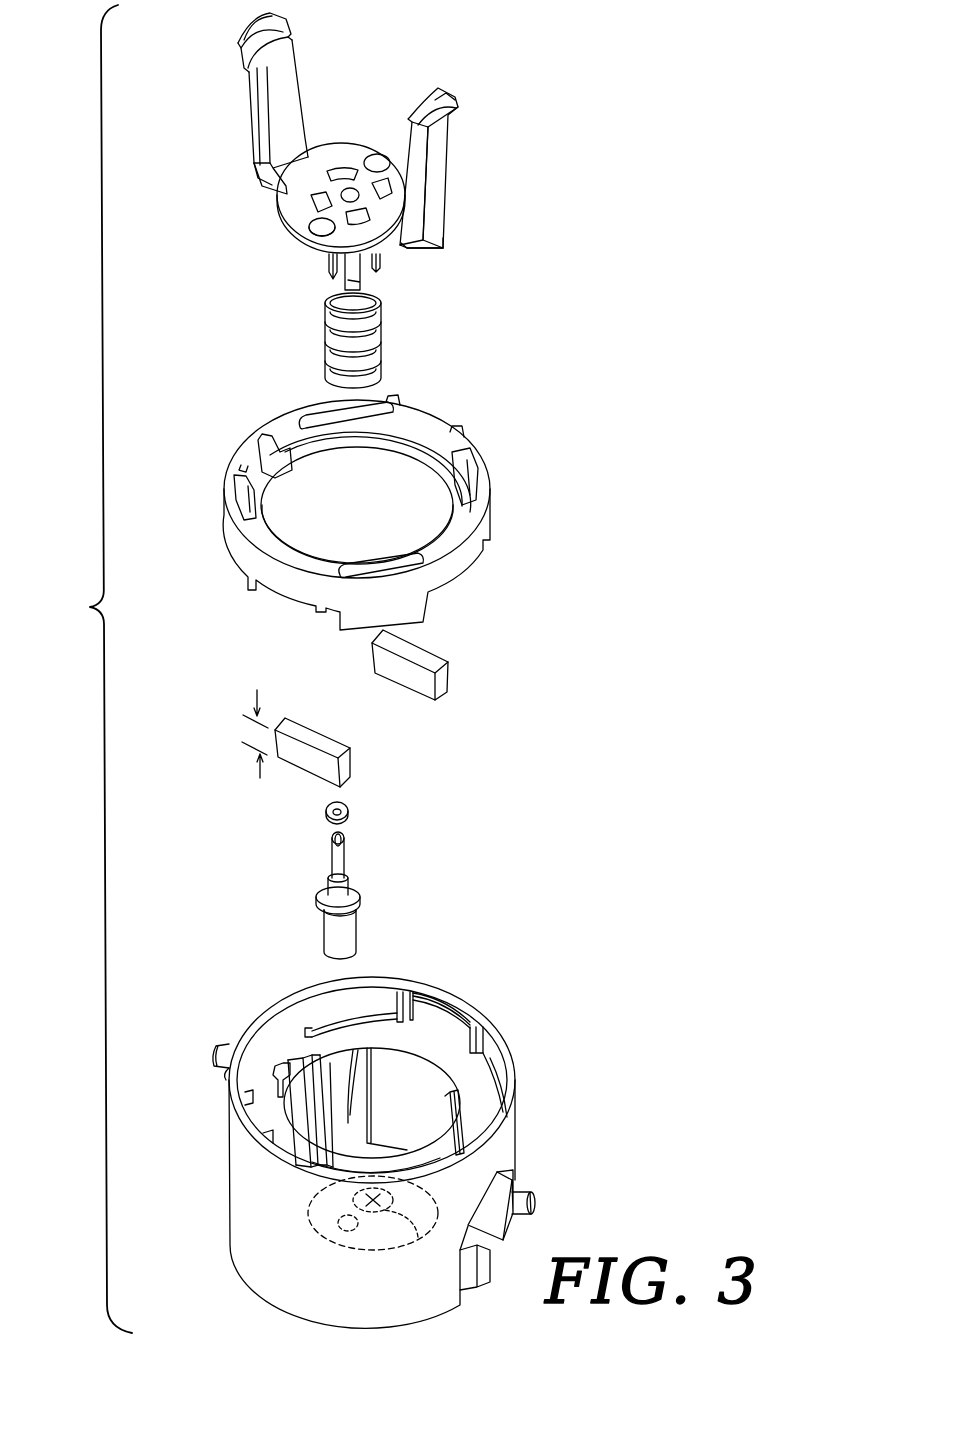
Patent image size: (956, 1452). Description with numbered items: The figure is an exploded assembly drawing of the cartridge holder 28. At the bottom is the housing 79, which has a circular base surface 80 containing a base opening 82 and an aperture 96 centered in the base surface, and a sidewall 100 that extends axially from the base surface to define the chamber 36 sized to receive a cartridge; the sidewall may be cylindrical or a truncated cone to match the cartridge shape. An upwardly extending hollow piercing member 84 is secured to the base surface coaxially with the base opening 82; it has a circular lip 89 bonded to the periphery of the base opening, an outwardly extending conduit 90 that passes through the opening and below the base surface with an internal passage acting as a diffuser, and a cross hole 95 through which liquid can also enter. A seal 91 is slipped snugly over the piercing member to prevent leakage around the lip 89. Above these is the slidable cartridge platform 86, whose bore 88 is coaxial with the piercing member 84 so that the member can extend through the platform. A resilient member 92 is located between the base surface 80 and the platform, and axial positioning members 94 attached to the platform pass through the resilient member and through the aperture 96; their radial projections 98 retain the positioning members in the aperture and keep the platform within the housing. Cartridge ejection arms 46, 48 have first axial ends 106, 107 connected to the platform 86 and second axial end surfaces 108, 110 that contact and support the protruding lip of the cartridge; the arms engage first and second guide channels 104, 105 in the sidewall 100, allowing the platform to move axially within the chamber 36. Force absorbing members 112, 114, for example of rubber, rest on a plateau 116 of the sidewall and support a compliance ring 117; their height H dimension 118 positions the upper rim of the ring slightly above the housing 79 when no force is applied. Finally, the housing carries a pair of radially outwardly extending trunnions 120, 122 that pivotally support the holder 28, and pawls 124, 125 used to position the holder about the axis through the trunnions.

The cartridge holder 28 is at (89, 669).
The chamber 36 is at (349, 1048).
The cartridge ejection arm 46 is at (246, 76).
The cartridge ejection arm 48 is at (449, 183).
The housing 79 is at (506, 1048).
The base surface 80 is at (383, 1170).
The base opening 82 is at (330, 1230).
The hollow piercing member 84 is at (346, 868).
The slidable cartridge platform 86 is at (346, 144).
The bore 88 is at (312, 224).
The circular lip 89 is at (321, 893).
The outwardly extending conduit 90 is at (351, 934).
The seal 91 is at (349, 811).
The resilient member 92 is at (326, 348).
The axial positioning member 94 is at (360, 274).
The cross hole 95 is at (346, 852).
The aperture 96 is at (410, 1240).
The radial projection 98 is at (330, 270).
The sidewall 100 is at (372, 1110).
The first guide channel 104 is at (297, 1058).
The second guide channel 105 is at (486, 1125).
The first axial end 106 is at (264, 192).
The first axial end 107 is at (441, 243).
The second axial end surface 108 is at (283, 24).
The second axial end surface 110 is at (446, 94).
The force absorbing member 112 is at (345, 765).
The force absorbing member 114 is at (447, 680).
The plateau 116 is at (441, 1029).
The compliance ring 117 is at (430, 432).
The height H dimension 118 is at (220, 700).
The trunnion 120 is at (212, 1058).
The trunnion 122 is at (538, 1206).
The pawl 124 is at (225, 1076).
The pawl 125 is at (505, 1195).